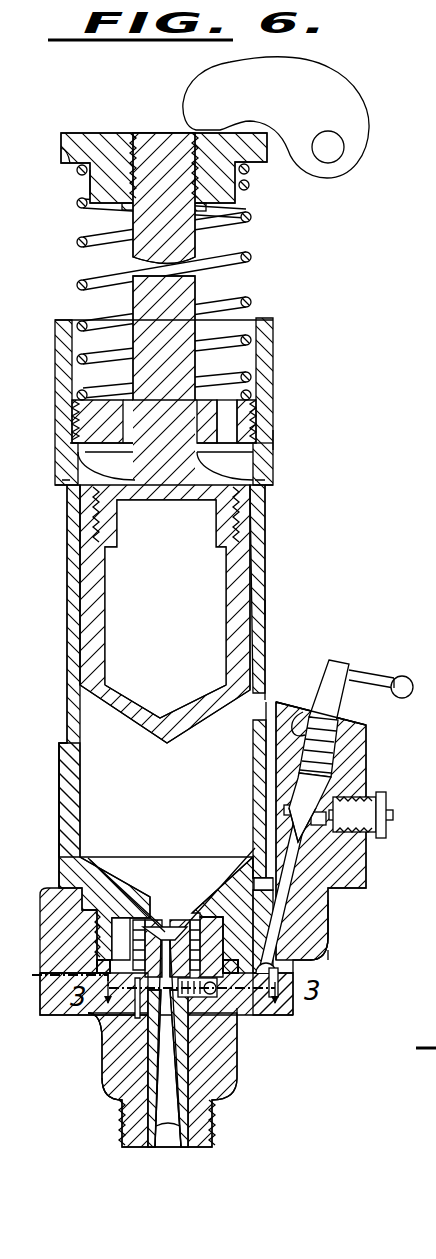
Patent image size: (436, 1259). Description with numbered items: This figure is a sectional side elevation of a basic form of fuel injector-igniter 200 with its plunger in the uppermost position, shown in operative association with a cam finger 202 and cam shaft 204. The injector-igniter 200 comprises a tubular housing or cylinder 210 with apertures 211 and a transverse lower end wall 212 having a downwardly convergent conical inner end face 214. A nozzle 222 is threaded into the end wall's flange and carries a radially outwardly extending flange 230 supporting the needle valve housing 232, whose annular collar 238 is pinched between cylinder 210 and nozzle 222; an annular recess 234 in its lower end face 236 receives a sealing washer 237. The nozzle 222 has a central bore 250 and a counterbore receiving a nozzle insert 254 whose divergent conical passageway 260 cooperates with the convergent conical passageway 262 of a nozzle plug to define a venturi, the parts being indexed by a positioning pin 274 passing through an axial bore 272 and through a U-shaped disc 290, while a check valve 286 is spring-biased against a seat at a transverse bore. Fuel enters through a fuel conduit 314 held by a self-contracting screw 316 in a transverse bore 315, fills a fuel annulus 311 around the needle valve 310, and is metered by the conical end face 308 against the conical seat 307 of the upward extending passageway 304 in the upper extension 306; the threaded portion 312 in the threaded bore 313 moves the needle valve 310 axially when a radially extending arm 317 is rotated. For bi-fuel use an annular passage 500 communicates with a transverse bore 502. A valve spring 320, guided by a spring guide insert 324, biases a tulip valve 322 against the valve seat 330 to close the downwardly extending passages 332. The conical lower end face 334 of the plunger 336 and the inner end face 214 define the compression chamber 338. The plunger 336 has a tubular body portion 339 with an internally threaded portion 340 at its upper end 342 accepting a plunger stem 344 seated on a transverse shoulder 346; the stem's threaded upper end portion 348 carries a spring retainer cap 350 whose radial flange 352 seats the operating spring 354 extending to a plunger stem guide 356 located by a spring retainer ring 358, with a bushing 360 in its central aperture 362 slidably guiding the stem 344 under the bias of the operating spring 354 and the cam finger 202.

The fuel injector-igniter 200 is at (313, 310).
The cam finger 202 is at (360, 87).
The cam shaft 204 is at (348, 133).
The tubular housing or cylinder 210 is at (268, 572).
The apertures 211 is at (63, 698).
The transverse lower end wall 212 is at (78, 880).
The conical inner end face 214 is at (220, 870).
The nozzle 222 is at (242, 1067).
The radially outwardly extending flange 230 is at (297, 1001).
The needle valve housing 232 is at (335, 928).
The annular recess 234 is at (43, 969).
The lower end face 236 is at (100, 1037).
The sealing washer 237 is at (302, 963).
The annular collar 238 is at (318, 945).
The central bore 250 is at (184, 1055).
The nozzle insert 254 is at (195, 1097).
The truncated downwardly divergent conical passageway 260 is at (174, 1128).
The truncated downwardly convergent conical passageway 262 is at (178, 912).
The axially extending bore 272 is at (382, 968).
The positioning pin 274 is at (103, 1045).
The check valve 286 is at (216, 996).
The U-shaped disc 290 is at (100, 1023).
The upward extending passageway 304 is at (288, 904).
The upper extension 306 is at (360, 736).
The conical seat 307 is at (317, 840).
The conical end face 308 is at (253, 817).
The needle valve 310 is at (323, 785).
The fuel annulus 311 is at (344, 820).
The threaded portion 312 is at (306, 712).
The threaded bore 313 is at (326, 758).
The fuel conduit 314 is at (387, 797).
The transverse bore 315 is at (429, 830).
The self-contracting screw 316 is at (350, 708).
The radially extending arm 317 is at (368, 666).
The valve spring 320 is at (125, 920).
The tulip valve 322 is at (152, 895).
The spring guide insert 324 is at (211, 910).
The valve seat 330 is at (354, 439).
The downwardly extending passages 332 is at (193, 870).
The conical lower end face 334 is at (140, 730).
The plunger 336 is at (258, 605).
The compression chamber 338 is at (168, 800).
The tubular body portion 339 is at (245, 635).
The internally threaded portion 340 is at (273, 482).
The upper end 342 is at (247, 513).
The plunger stem 344 is at (203, 292).
The transverse shoulder 346 is at (108, 548).
The threaded upper end portion 348 is at (155, 133).
The spring retainer cap 350 is at (100, 101).
The radial flange 352 is at (67, 154).
The operating spring 354 is at (76, 240).
The plunger stem guide 356 is at (108, 448).
The spring retainer ring 358 is at (264, 447).
The bushing 360 is at (236, 438).
The central aperture 362 is at (144, 408).
The annular passage 500 is at (346, 604).
The transverse bore 502 is at (435, 685).